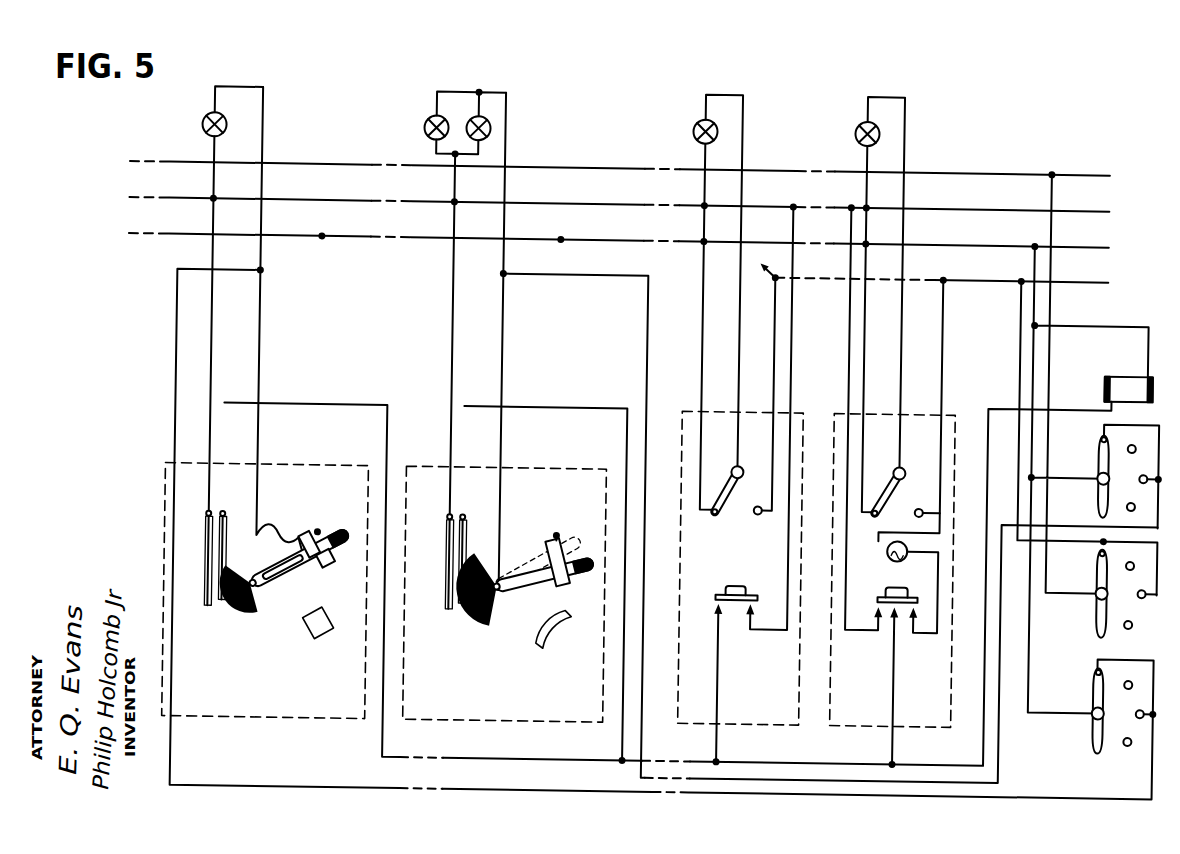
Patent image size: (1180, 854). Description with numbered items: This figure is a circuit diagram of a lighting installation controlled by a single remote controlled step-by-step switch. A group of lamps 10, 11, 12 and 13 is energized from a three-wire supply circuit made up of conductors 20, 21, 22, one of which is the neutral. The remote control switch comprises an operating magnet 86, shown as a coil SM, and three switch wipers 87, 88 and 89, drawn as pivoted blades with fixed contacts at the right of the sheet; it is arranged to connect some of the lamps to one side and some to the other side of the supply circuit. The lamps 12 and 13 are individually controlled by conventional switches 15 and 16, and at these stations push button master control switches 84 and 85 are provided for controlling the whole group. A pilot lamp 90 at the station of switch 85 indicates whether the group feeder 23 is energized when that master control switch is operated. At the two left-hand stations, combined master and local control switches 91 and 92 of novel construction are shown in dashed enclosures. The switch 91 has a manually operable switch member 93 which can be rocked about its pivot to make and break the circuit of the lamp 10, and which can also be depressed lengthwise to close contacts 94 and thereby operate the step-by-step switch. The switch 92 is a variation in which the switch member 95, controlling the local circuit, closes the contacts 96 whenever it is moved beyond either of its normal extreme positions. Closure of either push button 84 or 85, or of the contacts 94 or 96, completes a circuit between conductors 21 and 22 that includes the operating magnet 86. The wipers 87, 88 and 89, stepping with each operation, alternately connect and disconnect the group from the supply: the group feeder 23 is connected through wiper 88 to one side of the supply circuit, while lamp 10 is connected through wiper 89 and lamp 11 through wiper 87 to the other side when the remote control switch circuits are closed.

The lamp 10 is at (223, 121).
The lamp 11 is at (466, 112).
The lamp 12 is at (695, 115).
The lamp 13 is at (858, 113).
The conventional switch 15 is at (736, 487).
The conventional switch 16 is at (894, 487).
The supply circuit conductor 20 is at (301, 161).
The supply circuit conductor 21 is at (301, 197).
The supply circuit conductor 22 is at (301, 233).
The group feeder 23 is at (928, 268).
The push button master control switch 84 is at (741, 579).
The push button master control switch 85 is at (895, 583).
The operating magnet 86 is at (1124, 362).
The switch wiper 87 is at (1103, 438).
The switch wiper 88 is at (1103, 553).
The switch wiper 89 is at (1100, 668).
The pilot lamp 90 is at (893, 547).
The combined master and local control switch 91 is at (296, 655).
The combined master and local control switch 92 is at (520, 668).
The manually operable switch member 93 is at (333, 551).
The contacts 94 is at (227, 600).
The manually operable switch member 95 is at (523, 575).
The contacts 96 is at (467, 602).